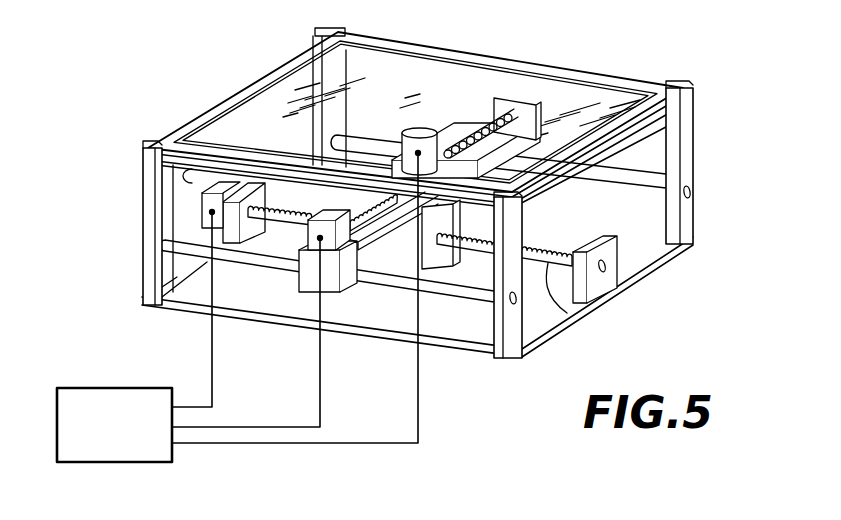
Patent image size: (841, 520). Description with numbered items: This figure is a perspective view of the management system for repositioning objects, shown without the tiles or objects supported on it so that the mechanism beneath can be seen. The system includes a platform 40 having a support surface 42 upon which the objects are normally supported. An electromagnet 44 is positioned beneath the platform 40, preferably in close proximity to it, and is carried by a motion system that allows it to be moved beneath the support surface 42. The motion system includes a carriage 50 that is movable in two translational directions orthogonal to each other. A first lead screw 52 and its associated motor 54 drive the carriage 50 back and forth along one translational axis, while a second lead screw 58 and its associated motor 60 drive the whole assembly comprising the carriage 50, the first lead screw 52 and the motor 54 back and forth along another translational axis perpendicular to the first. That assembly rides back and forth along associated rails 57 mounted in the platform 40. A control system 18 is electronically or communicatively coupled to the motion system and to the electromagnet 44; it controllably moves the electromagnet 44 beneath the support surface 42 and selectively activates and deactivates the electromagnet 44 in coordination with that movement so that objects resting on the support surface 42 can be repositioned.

The control system 18 is at (98, 388).
The platform 40 is at (186, 168).
The support surface 42 is at (307, 96).
The electromagnet 44 is at (427, 133).
The carriage 50 is at (392, 178).
The first lead screw 52 is at (511, 112).
The motor 54 is at (308, 247).
The rails 57 is at (628, 177).
The second lead screw 58 is at (592, 307).
The motor 60 is at (202, 199).